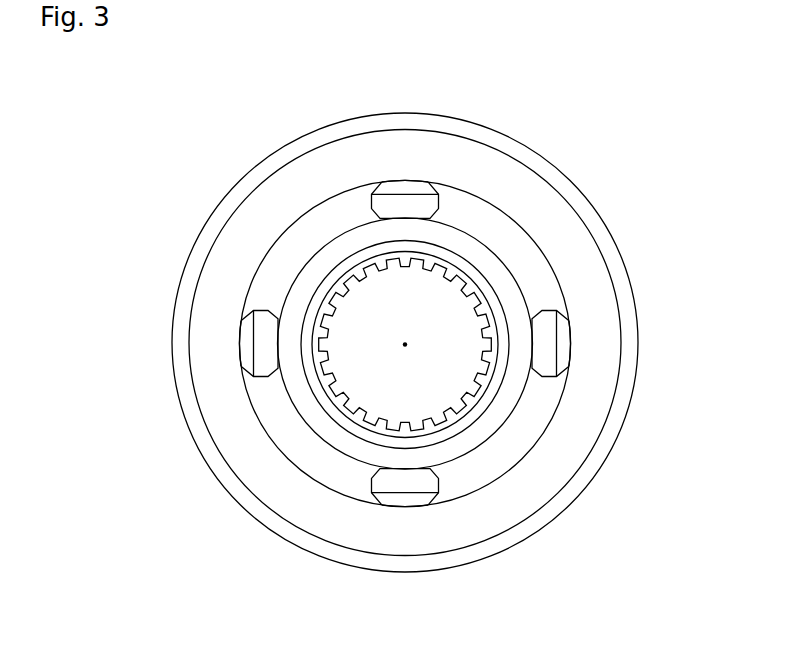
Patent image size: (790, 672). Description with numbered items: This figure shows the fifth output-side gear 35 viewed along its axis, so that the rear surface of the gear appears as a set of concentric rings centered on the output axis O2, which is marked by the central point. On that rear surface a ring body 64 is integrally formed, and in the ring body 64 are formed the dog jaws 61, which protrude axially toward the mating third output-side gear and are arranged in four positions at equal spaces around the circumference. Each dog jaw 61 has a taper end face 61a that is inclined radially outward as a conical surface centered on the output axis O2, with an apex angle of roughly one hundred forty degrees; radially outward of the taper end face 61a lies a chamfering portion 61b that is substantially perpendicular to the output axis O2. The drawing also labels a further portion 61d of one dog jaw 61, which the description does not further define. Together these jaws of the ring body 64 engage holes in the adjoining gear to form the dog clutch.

The fifth output-side gear 35 is at (140, 158).
The dog jaw 61 is at (363, 198).
The taper end face 61a is at (380, 193).
The chamfering portion 61b is at (418, 188).
The roller inner end face 61d is at (420, 483).
The ring body 64 is at (322, 458).
The output axis O2 is at (407, 347).